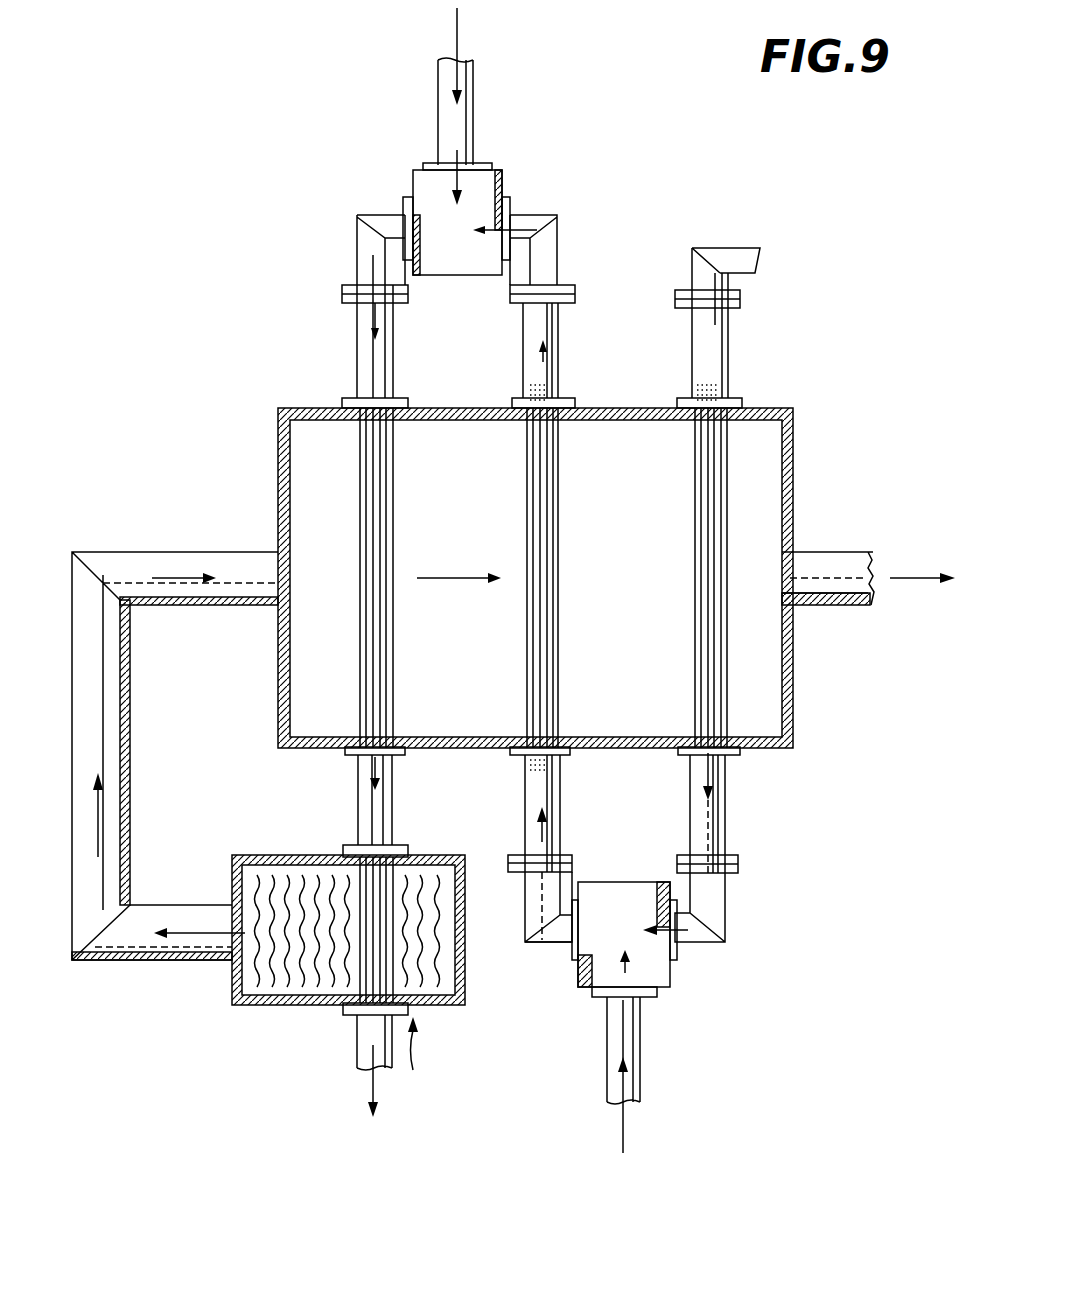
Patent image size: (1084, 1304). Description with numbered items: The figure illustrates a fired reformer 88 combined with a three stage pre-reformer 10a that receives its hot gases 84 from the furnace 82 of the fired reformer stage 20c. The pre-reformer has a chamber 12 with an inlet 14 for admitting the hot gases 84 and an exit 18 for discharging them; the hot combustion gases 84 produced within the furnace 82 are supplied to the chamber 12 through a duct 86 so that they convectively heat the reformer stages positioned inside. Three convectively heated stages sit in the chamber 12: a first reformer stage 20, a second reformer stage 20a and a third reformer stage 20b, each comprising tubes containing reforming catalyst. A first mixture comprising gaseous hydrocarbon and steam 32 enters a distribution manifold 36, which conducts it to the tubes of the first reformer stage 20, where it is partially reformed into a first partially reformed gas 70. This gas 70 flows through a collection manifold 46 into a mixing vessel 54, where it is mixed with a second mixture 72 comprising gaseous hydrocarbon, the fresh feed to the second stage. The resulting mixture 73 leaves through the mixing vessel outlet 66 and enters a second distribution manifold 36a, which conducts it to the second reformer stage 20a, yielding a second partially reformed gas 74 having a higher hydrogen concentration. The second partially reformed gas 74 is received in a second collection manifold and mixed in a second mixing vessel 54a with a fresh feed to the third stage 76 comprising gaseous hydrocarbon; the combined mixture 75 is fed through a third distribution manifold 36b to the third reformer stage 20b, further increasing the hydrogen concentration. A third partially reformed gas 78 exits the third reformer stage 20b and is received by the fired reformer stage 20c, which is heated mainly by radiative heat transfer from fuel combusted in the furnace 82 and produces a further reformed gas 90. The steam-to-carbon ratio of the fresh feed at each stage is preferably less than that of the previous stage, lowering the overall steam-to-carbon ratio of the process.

The three stage pre-reformer 10a is at (680, 163).
The chamber 12 is at (280, 472).
The inlet 14 is at (287, 583).
The exit 18 is at (787, 570).
The first reformer stage 20 is at (695, 578).
The second reformer stage 20a is at (547, 515).
The third reformer stage 20b is at (392, 478).
The fired reformer stage 20c is at (350, 987).
The mixture comprising gaseous hydrocarbon and steam 32 is at (782, 260).
The distribution manifold 36 is at (718, 353).
The second distribution manifold 36a is at (527, 817).
The third distribution manifold 36b is at (370, 388).
The collection manifold 46 is at (723, 822).
The mixing vessel 54 is at (672, 977).
The second mixing vessel 54a is at (413, 167).
The mixing vessel outlet 66 is at (557, 942).
The first partially reformed gas 70 is at (713, 782).
The second mixture comprising gaseous hydrocarbon 72 is at (617, 1000).
The mixture 73 is at (545, 837).
The second partially reformed gas 74 is at (517, 217).
The mixture 75 is at (373, 273).
The fresh feed to the third stage 76 is at (455, 23).
The third partially reformed gas 78 is at (357, 765).
The furnace 82 is at (427, 1007).
The hot combustion gases 84 is at (188, 578).
The duct 86 is at (120, 763).
The fired reformer 88 is at (413, 1070).
The further reformed gas 90 is at (370, 1082).